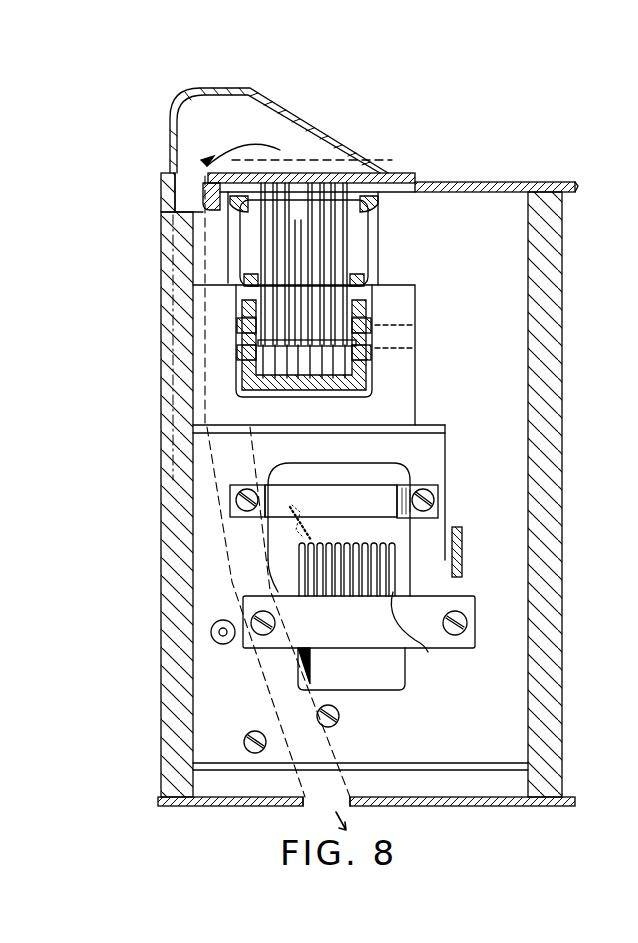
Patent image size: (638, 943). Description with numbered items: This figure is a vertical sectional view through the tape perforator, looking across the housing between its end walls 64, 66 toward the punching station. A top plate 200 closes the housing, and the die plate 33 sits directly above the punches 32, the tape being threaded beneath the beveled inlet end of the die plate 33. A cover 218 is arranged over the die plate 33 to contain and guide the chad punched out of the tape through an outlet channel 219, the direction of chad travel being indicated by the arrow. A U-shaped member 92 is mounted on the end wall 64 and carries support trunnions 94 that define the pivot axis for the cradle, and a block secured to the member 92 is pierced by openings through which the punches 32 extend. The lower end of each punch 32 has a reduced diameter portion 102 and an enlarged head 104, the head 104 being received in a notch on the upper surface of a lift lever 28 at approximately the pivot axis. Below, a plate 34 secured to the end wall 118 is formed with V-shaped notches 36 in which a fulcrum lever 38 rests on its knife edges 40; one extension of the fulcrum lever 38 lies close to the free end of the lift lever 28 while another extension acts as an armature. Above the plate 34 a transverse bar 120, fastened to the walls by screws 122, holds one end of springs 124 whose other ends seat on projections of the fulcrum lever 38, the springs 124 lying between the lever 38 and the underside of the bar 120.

The cover 218 is at (325, 136).
The die plate 33 is at (392, 172).
The top plate 200 is at (484, 182).
The punch 32 is at (340, 248).
The outlet channel 219 is at (170, 243).
The U-shaped member 92 is at (205, 298).
The support trunnions 94 is at (247, 337).
The reduced diameter portion 102 is at (340, 330).
The enlarged head 104 is at (372, 342).
The lift lever 28 is at (358, 380).
The transverse bar 120 is at (240, 492).
The screw 122 is at (240, 510).
The spring 124 is at (297, 538).
The V-shaped notch 36 is at (390, 585).
The fulcrum lever 38 is at (412, 591).
The plate 34 is at (247, 608).
The end wall 64 is at (173, 632).
The end wall 66 is at (548, 648).
The knife edge 40 is at (373, 641).
The end wall 118 is at (205, 712).